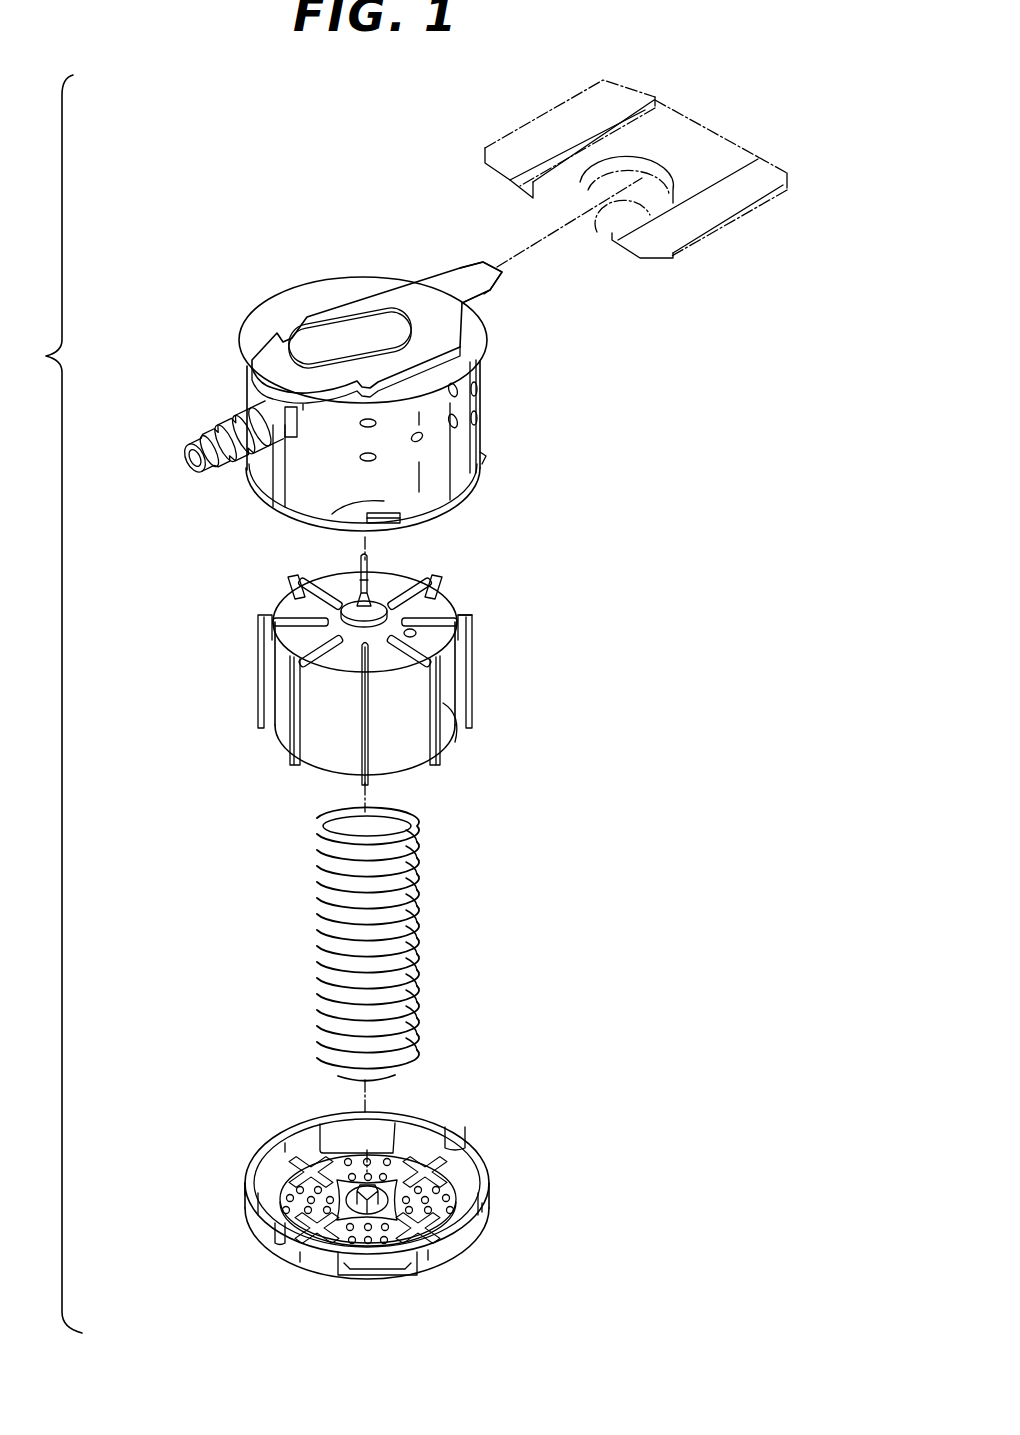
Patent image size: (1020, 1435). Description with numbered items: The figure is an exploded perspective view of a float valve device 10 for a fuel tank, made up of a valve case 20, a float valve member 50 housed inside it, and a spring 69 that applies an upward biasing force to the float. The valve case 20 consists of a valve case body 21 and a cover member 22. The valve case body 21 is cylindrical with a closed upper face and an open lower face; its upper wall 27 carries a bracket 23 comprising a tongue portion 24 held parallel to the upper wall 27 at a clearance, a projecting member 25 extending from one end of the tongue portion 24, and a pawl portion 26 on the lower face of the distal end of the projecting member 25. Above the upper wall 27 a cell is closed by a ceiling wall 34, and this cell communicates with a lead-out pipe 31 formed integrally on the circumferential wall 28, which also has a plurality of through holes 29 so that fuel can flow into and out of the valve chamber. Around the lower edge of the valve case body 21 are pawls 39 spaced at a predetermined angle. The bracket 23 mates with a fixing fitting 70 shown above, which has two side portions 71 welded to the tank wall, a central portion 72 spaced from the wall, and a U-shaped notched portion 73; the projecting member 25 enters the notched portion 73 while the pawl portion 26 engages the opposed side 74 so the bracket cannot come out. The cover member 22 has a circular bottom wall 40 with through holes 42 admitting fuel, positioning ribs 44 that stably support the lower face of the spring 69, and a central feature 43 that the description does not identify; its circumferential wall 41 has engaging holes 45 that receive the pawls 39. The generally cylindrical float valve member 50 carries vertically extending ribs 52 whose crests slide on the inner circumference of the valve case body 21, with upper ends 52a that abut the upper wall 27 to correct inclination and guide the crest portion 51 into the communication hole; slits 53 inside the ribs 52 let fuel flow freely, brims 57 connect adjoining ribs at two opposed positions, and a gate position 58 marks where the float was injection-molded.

The float valve device 10 is at (236, 246).
The valve case 20 is at (208, 404).
The valve case body 21 is at (502, 418).
The cover member 22 is at (498, 1214).
The bracket 23 is at (401, 296).
The tongue portion 24 is at (455, 325).
The projecting member 25 is at (474, 266).
The pawl portion 26 is at (484, 292).
The upper wall 27 is at (315, 288).
The circumferential wall 28 is at (447, 482).
The through holes 29 is at (468, 406).
The lead-out pipe 31 is at (222, 470).
The ceiling wall 34 is at (338, 335).
The pawls 39 is at (487, 458).
The bottom wall 40 is at (462, 1175).
The circumferential wall 41 is at (258, 1152).
The through holes 42 is at (397, 1152).
The center opening 43 is at (382, 1226).
The positioning ribs 44 is at (345, 1237).
The engaging holes 45 is at (343, 1137).
The float valve member 50 is at (500, 670).
The crest portion 51 is at (375, 607).
The ribs 52 is at (258, 660).
The upper ends 52a is at (465, 612).
The slits 53 is at (330, 603).
The brims 57 is at (470, 738).
The gate position 58 is at (455, 627).
The spring 69 is at (417, 950).
The fixing fitting 70 is at (723, 252).
The side portions 71 is at (520, 142).
The central portion 72 is at (709, 150).
The notched portion 73 is at (597, 232).
The side 74 is at (668, 118).